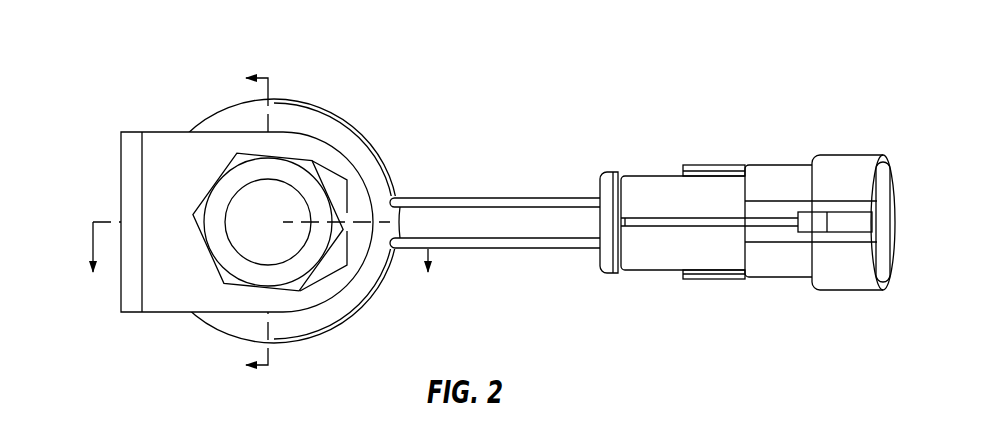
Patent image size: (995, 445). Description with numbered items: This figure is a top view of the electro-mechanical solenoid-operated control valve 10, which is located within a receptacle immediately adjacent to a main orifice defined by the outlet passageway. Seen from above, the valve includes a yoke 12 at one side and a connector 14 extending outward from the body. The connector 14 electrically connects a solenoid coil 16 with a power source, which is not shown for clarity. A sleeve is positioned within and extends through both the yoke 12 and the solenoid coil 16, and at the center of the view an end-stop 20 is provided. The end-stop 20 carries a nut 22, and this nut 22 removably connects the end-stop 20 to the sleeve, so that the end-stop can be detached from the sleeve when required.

The solenoid-operated control valve 10 is at (491, 191).
The yoke 12 is at (135, 132).
The connector 14 is at (750, 162).
The solenoid coil 16 is at (370, 147).
The end-stop 20 is at (295, 188).
The nut 22 is at (287, 290).